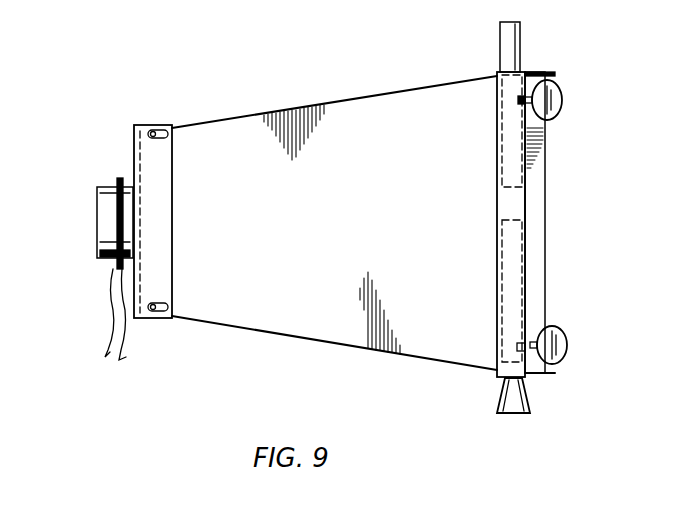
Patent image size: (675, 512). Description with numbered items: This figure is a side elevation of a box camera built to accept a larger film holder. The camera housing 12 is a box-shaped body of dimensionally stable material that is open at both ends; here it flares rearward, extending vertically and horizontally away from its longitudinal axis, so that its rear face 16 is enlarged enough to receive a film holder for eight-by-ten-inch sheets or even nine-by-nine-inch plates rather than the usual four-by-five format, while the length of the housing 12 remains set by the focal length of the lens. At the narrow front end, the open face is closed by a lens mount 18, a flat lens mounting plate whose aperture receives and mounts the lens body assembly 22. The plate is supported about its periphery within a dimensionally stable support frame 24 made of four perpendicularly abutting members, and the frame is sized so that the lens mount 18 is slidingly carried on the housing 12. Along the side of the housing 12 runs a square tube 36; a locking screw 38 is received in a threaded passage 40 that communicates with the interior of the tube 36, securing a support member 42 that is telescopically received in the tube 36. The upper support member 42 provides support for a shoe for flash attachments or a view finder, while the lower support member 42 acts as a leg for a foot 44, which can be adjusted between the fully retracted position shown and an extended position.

The camera housing 12 is at (345, 256).
The rear face 16 is at (545, 282).
The lens mount 18 is at (134, 155).
The lens body assembly 22 is at (97, 232).
The support frame 24 is at (162, 268).
The square tube 36 is at (518, 203).
The locking screw 38 is at (562, 100).
The threaded passage 40 is at (514, 100).
The support member 42 is at (505, 161).
The foot 44 is at (520, 413).